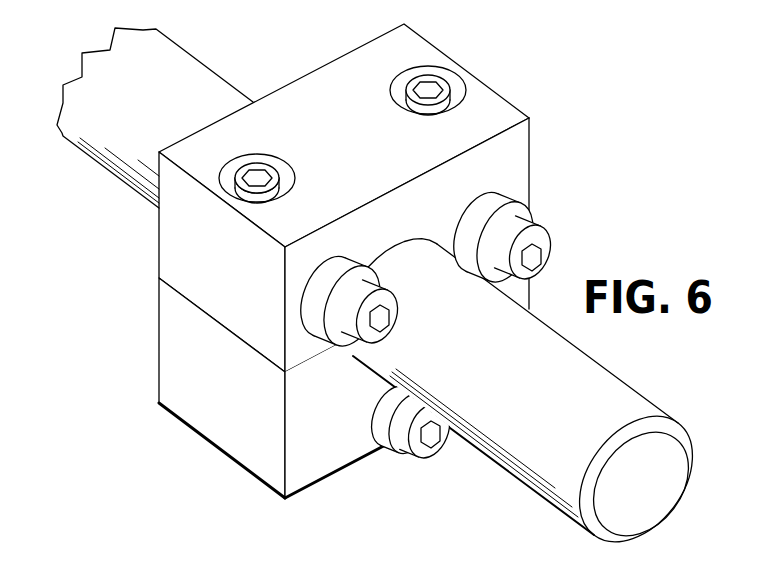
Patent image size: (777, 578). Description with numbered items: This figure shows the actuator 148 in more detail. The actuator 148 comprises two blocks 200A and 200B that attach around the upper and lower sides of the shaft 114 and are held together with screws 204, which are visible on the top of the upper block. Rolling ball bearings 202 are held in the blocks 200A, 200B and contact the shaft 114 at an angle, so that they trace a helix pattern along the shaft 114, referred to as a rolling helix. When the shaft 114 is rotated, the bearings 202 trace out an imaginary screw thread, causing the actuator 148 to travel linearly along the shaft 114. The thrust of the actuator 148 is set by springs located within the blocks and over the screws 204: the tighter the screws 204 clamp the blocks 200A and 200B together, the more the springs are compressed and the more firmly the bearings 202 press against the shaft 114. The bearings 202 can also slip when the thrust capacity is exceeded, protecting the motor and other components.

The shaft 114 is at (118, 184).
The actuator 148 is at (522, 67).
The block 200A is at (530, 153).
The block 200B is at (158, 350).
The rolling ball bearing 202 is at (541, 215).
The screw 204 is at (276, 156).